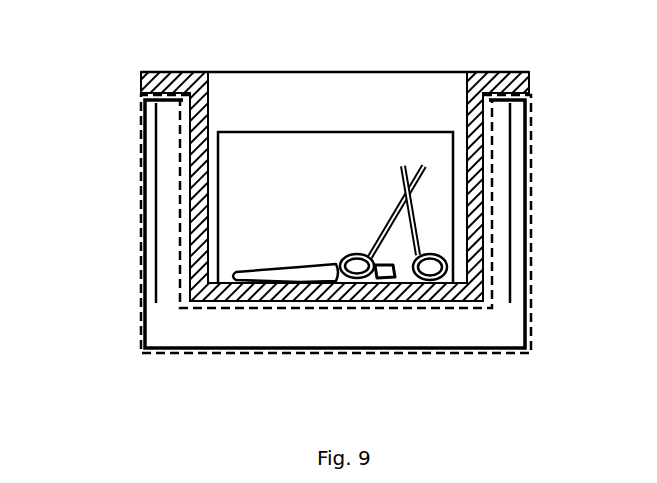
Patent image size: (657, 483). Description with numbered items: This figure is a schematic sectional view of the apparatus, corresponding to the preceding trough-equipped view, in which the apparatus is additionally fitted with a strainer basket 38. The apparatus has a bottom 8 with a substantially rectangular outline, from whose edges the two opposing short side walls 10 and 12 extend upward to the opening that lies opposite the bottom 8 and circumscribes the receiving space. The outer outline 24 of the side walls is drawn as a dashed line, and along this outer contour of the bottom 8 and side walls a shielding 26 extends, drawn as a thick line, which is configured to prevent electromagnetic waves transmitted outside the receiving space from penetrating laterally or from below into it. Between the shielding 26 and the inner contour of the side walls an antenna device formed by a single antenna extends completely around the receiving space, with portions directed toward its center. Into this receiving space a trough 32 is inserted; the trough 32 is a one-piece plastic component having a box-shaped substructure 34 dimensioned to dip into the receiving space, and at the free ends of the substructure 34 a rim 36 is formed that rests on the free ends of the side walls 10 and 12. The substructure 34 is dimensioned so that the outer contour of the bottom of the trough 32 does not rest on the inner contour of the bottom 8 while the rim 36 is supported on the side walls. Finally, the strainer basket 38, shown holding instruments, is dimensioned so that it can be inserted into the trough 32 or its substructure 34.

The bottom 8 is at (328, 376).
The short side wall 10 is at (104, 138).
The short side wall 12 is at (562, 214).
The outer outline 24 is at (138, 278).
The shielding 26 is at (136, 114).
The trough 32 is at (493, 73).
The box-shaped substructure 34 is at (479, 165).
The rim 36 is at (530, 82).
The strainer basket 38 is at (336, 130).